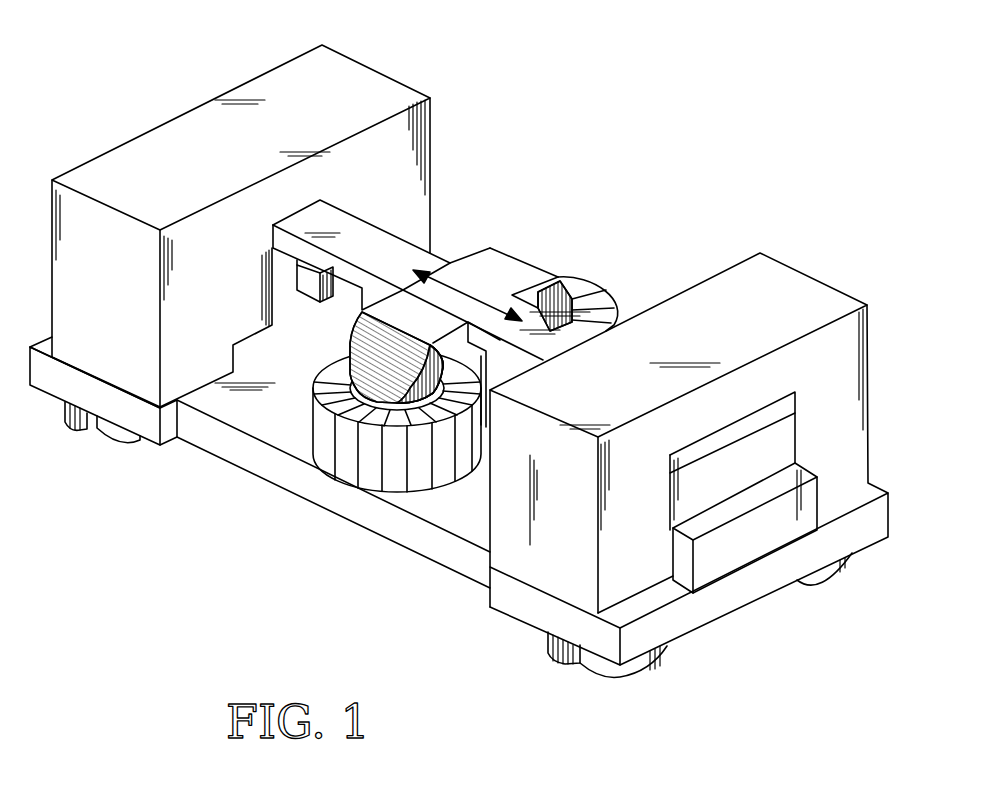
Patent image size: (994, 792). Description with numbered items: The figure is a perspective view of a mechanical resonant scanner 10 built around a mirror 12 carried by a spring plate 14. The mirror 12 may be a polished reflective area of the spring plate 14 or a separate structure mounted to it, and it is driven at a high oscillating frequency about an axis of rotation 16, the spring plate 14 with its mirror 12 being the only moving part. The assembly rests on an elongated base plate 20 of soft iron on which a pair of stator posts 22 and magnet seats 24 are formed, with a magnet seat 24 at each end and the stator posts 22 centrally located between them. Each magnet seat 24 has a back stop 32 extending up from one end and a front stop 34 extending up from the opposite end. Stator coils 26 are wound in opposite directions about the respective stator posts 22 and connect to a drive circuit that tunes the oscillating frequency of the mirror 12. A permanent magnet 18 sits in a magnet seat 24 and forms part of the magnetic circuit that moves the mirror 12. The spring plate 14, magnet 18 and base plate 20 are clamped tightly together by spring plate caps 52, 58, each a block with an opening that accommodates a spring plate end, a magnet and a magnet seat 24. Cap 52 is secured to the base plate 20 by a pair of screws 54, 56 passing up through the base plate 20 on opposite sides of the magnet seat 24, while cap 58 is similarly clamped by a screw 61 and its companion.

The mechanical resonant scanner 10 is at (681, 113).
The mirror 12 is at (492, 257).
The spring plate 14 is at (365, 233).
The axis of rotation 16 is at (452, 289).
The permanent magnet 18 is at (790, 432).
The base plate 20 is at (216, 444).
The stator post 22 is at (353, 329).
The magnet seat 24 is at (466, 374).
The stator coil 26 is at (312, 411).
The back stop 32 is at (817, 478).
The front stop 34 is at (283, 268).
The spring plate cap 52 is at (807, 290).
The screw 54 is at (665, 650).
The screw 56 is at (838, 577).
The spring plate cap 58 is at (366, 66).
The screw 61 is at (109, 437).